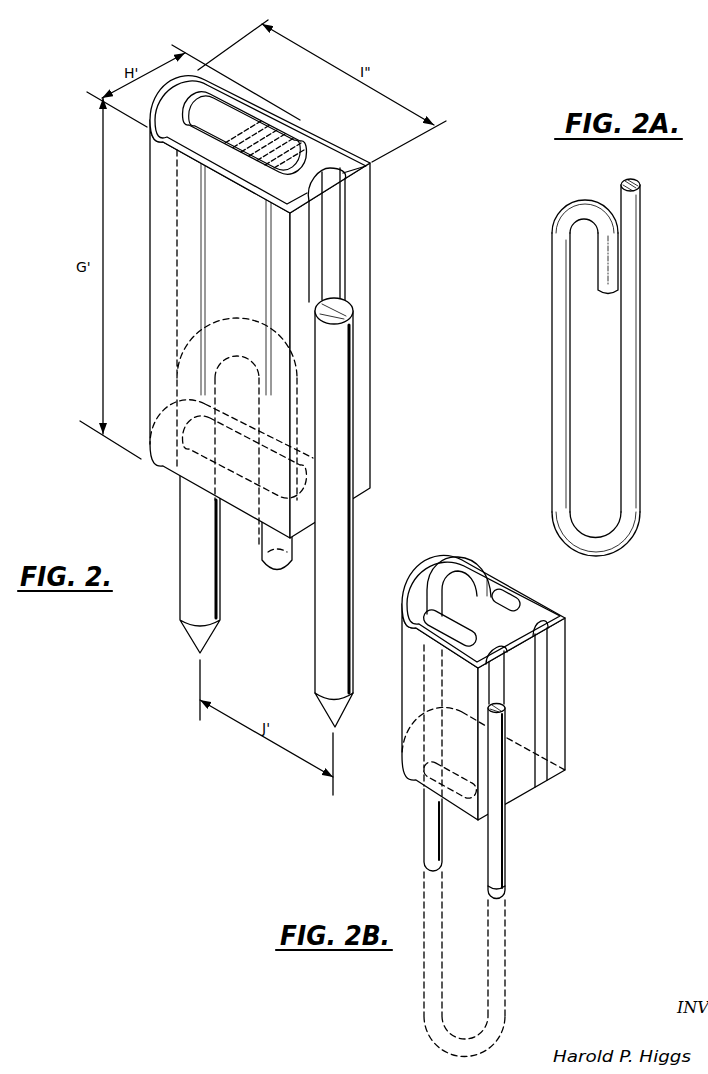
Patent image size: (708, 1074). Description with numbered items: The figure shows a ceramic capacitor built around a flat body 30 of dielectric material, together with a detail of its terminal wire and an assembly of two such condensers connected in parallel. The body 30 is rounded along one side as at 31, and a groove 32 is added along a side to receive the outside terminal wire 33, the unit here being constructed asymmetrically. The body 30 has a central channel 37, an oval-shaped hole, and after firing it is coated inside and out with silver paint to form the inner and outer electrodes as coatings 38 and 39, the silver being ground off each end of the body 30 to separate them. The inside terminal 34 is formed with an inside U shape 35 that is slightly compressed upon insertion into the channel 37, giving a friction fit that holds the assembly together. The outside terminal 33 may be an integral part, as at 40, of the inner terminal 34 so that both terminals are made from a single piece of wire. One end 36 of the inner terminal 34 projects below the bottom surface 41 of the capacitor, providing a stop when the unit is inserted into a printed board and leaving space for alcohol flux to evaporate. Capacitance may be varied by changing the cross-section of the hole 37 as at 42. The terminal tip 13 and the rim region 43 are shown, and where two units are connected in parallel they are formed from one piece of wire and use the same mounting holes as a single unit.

In FIG. 2, the pointed tip of leg 13 is at (343, 724).
In FIG. 2B, the pointed tip of leg 13 is at (508, 896).
In FIG. 2, the flat body 30 is at (172, 456).
In FIG. 2B, the flat body 30 is at (556, 650).
In FIG. 2, the rounded side 31 is at (148, 343).
In FIG. 2, the groove 32 is at (333, 213).
In FIG. 2B, the groove 32 is at (545, 777).
In FIG. 2, the terminal wire 33 is at (338, 628).
In FIG. 2A, the terminal wire 33 is at (628, 380).
In FIG. 2B, the terminal wire 33 is at (498, 855).
In FIG. 2, the inside terminal 34 is at (207, 578).
In FIG. 2A, the inside terminal 34 is at (562, 362).
In FIG. 2B, the inside terminal 34 is at (432, 833).
In FIG. 2, the inside U shape 35 is at (243, 326).
In FIG. 2A, the inside U shape 35 is at (578, 206).
In FIG. 2B, the inside U shape 35 is at (465, 565).
In FIG. 2, the end of inner terminal 36 is at (277, 564).
In FIG. 2A, the end of inner terminal 36 is at (608, 292).
In FIG. 2B, the end of inner terminal 36 is at (483, 593).
In FIG. 2, the central channel 37 is at (220, 113).
In FIG. 2B, the central channel 37 is at (508, 610).
In FIG. 2, the inner electrode coating 38 is at (250, 117).
In FIG. 2, the outer electrode coating 39 is at (335, 149).
In FIG. 2A, the integral part 40 is at (578, 538).
In FIG. 2B, the integral part 40 is at (445, 1046).
In FIG. 2, the bottom surface 41 is at (232, 508).
In FIG. 2, the changed cross-section of hole 42 is at (263, 163).
In FIG. 2, the rim of block 43 is at (213, 148).